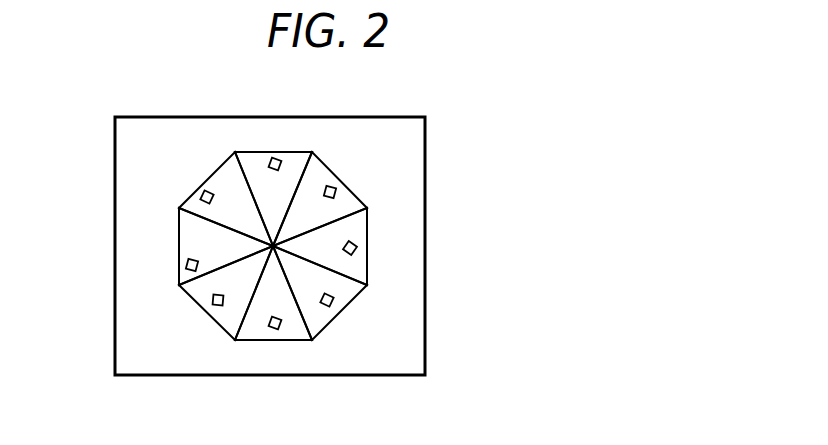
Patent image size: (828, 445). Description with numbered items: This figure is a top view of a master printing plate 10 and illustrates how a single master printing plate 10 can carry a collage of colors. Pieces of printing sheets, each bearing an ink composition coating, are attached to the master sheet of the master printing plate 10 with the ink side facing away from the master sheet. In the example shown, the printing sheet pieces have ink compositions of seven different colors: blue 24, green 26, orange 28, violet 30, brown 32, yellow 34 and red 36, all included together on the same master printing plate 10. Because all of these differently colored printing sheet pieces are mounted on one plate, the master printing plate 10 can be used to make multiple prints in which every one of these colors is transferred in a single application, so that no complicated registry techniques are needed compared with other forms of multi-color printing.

The master printing plate 10 is at (575, 115).
The blue ink composition 24 is at (348, 195).
The green ink composition 26 is at (358, 232).
The orange ink composition 28 is at (347, 292).
The violet ink composition 30 is at (258, 332).
The brown ink composition 32 is at (195, 290).
The yellow ink composition 34 is at (193, 235).
The red ink composition 36 is at (255, 165).